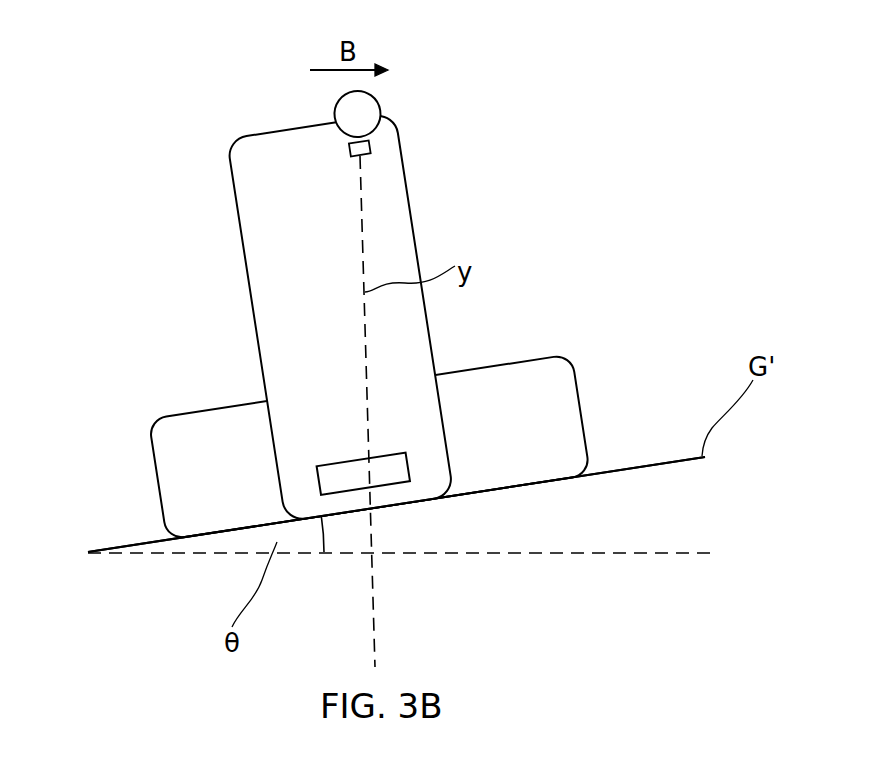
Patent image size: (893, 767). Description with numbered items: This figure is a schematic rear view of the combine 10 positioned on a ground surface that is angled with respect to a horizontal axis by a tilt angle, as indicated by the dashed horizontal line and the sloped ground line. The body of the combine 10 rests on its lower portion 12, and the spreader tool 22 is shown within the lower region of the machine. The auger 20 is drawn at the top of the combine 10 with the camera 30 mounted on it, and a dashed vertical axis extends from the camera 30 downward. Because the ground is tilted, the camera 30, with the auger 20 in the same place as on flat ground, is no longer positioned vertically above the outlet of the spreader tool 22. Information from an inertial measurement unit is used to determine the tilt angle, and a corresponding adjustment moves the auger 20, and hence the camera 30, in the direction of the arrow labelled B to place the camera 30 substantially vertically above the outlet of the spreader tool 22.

The combine 10 is at (118, 263).
The base 12 is at (575, 378).
The auger 20 is at (337, 110).
The spreader tool 22 is at (430, 498).
The camera 30 is at (369, 148).